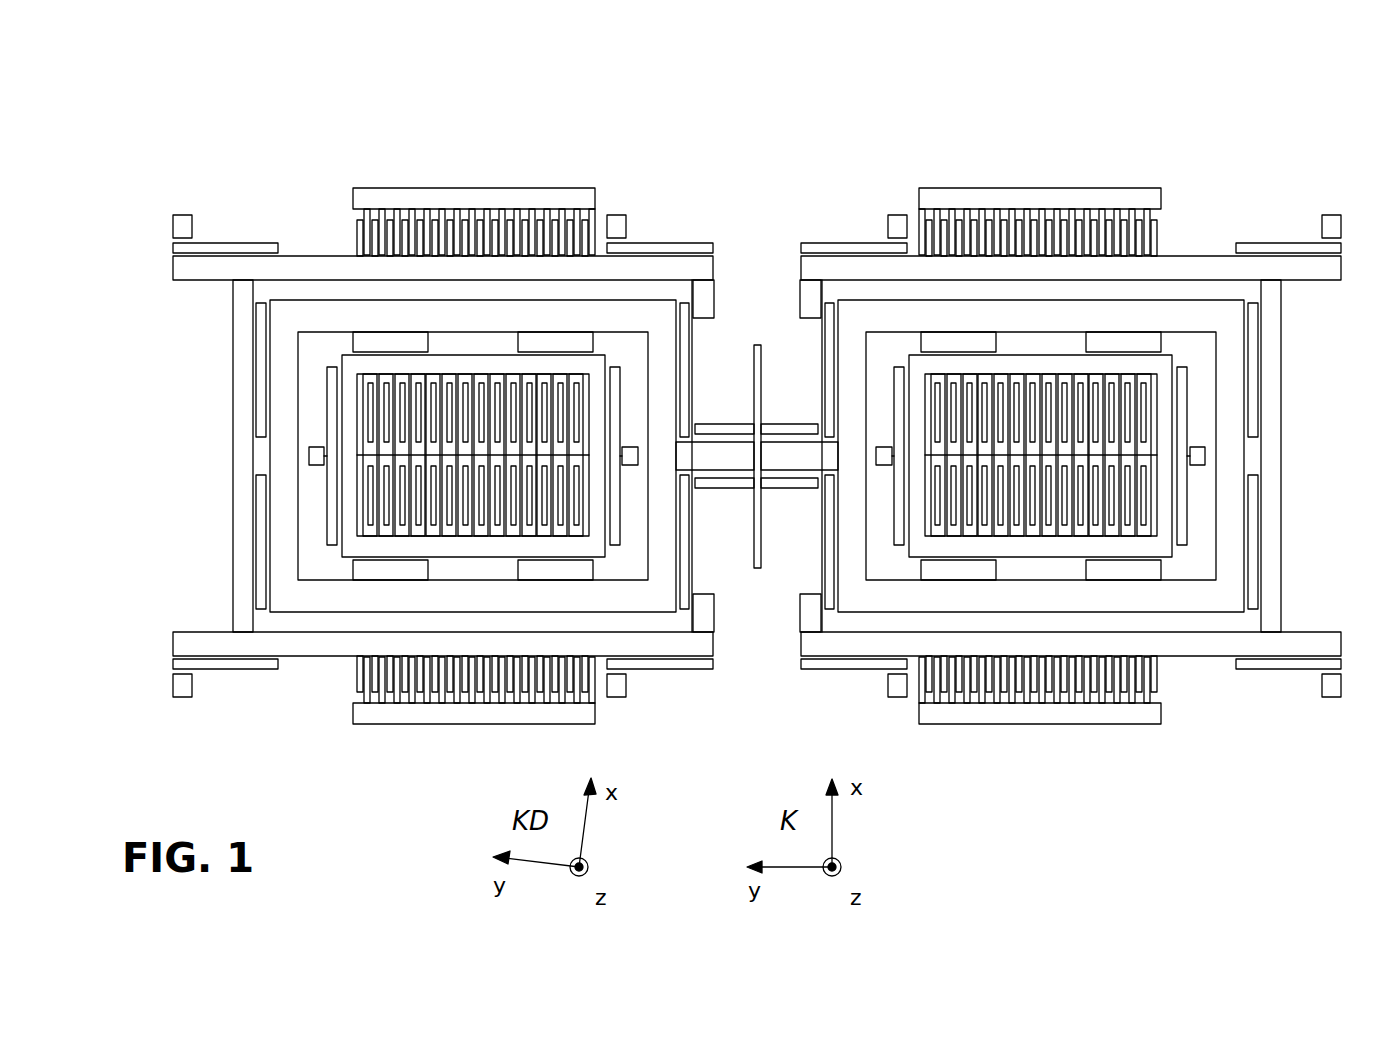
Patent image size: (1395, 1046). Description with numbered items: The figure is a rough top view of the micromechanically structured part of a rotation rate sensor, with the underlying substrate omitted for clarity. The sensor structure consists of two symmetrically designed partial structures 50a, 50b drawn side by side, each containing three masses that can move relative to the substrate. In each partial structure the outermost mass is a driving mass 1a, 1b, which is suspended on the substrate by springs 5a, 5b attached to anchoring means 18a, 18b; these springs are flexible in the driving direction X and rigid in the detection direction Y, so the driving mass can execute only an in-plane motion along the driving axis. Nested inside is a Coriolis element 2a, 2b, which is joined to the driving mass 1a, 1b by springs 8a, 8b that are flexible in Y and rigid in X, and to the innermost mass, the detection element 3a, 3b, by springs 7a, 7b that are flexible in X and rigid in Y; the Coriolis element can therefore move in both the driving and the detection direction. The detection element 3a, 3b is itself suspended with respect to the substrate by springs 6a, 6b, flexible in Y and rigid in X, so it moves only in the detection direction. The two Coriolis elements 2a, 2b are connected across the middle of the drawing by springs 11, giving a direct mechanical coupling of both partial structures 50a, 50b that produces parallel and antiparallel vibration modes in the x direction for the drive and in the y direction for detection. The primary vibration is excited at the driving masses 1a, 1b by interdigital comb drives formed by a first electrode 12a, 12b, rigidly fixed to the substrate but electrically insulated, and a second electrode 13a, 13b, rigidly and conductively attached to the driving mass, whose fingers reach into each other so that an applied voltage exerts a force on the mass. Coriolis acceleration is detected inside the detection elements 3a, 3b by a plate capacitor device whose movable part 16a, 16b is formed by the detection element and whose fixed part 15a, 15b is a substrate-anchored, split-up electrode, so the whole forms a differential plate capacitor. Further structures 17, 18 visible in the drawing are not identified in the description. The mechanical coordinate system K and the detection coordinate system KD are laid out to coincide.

The partial structure 50a is at (718, 80).
The partial structure 50b is at (1303, 80).
The driving mass 1a is at (292, 268).
The driving mass 1b is at (822, 268).
The Coriolis element 2a is at (335, 312).
The Coriolis element 2b is at (885, 314).
The detection element 3a is at (440, 360).
The detection element 3b is at (915, 368).
The springs 5a is at (258, 248).
The springs 5b is at (823, 270).
The springs 6a is at (622, 375).
The springs 6b is at (1182, 430).
The springs 7a is at (540, 340).
The springs 7b is at (1105, 340).
The springs 8a is at (256, 432).
The springs 8b is at (1250, 383).
The springs 11 is at (752, 425).
The first electrode 12a is at (462, 193).
The first electrode 12b is at (985, 193).
The second electrode 13a is at (593, 237).
The second electrode 13b is at (1163, 237).
The fixed part of plate capacitor device 15a is at (372, 504).
The fixed part of plate capacitor device 15b is at (1142, 505).
The movable part of plate capacitor device 16a is at (378, 512).
The movable part of plate capacitor device 16b is at (1138, 512).
The detection mass center beam 17 is at (373, 453).
The stop elements 18 is at (317, 450).
The anchoring means 18a is at (175, 220).
The anchoring means 18b is at (1332, 218).